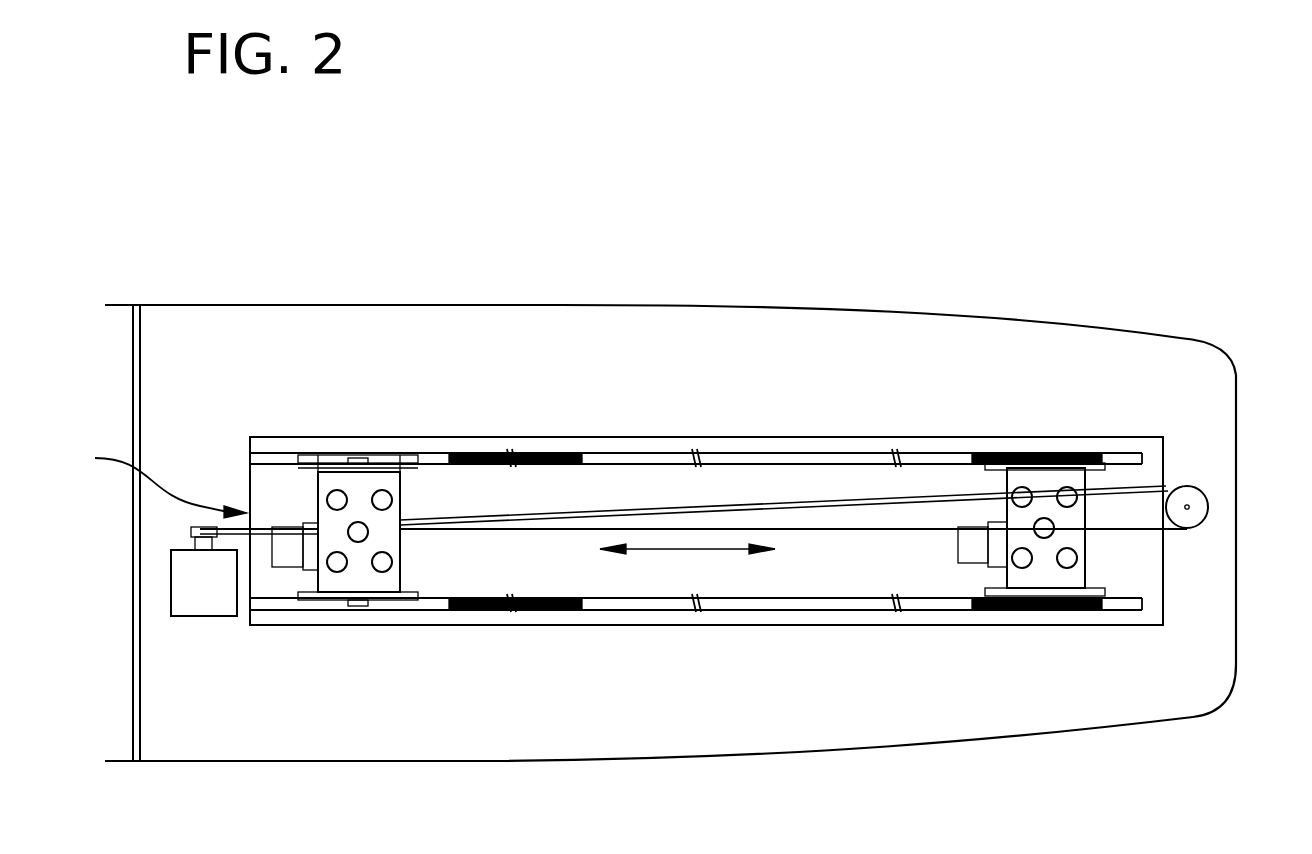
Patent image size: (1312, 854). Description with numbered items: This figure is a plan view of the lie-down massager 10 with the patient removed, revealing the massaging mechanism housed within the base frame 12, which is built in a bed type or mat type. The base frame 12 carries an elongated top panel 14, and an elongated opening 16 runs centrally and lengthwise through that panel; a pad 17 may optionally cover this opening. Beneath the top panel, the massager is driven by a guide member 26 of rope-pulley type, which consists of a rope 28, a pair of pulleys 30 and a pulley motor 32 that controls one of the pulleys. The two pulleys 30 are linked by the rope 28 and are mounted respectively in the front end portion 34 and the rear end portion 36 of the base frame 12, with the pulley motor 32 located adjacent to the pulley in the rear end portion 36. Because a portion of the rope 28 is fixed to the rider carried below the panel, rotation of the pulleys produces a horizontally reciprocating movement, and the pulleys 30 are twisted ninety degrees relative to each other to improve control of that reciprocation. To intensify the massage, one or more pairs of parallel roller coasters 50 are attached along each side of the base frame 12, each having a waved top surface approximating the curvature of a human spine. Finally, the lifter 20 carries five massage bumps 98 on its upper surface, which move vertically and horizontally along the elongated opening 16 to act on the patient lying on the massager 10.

The lie-down massager 10 is at (732, 166).
The base frame 12 is at (1215, 355).
The elongated top panel 14 is at (1152, 357).
The elongated opening 16 is at (262, 483).
The pad 17 is at (808, 440).
The lifter 20 is at (323, 515).
The guide member 26 is at (152, 480).
The rope 28 is at (823, 530).
The pulleys 30 is at (1195, 512).
The pulley motor 32 is at (180, 598).
The front end portion 34 is at (1213, 452).
The rear end portion 36 is at (153, 530).
The roller coasters 50 is at (552, 450).
The massage bumps 98 is at (380, 490).